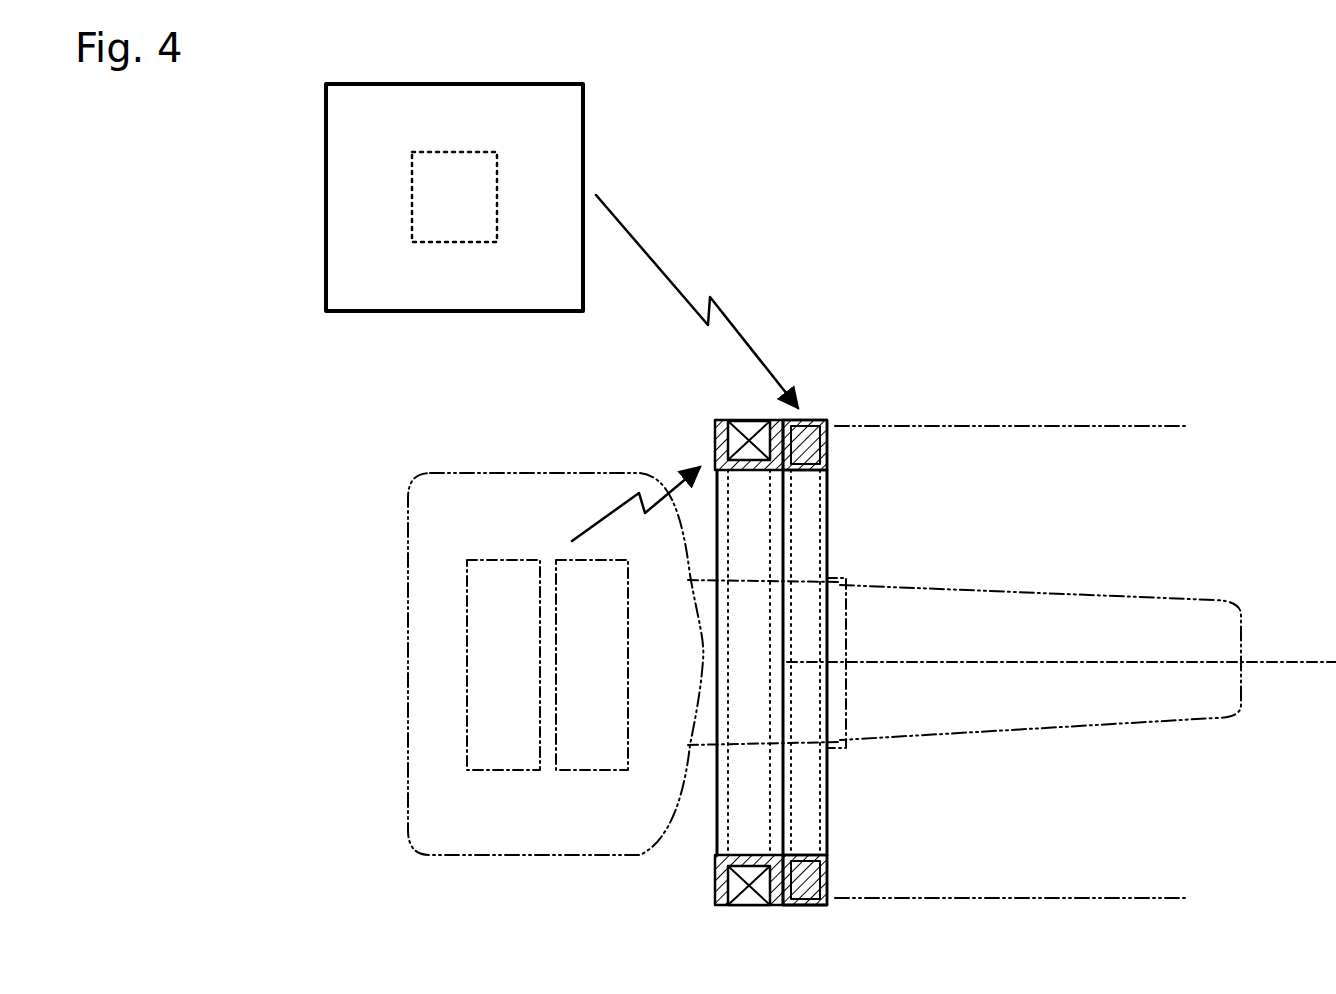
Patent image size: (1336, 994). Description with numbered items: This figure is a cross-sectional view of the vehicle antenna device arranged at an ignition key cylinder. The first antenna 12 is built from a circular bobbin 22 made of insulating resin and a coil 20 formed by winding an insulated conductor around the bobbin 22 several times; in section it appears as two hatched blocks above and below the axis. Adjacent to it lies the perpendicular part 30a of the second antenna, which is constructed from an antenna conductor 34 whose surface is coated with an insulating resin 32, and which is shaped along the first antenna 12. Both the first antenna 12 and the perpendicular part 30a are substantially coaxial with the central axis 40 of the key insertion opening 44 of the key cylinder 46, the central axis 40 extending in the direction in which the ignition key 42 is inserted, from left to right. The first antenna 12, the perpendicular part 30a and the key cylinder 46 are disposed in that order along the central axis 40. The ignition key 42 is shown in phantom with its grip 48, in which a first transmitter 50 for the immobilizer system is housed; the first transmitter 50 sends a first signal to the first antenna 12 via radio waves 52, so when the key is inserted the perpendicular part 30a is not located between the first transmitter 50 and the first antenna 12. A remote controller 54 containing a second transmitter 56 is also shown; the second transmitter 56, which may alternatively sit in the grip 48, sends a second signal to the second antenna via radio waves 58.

The first antenna 12 is at (735, 655).
The coil 20 is at (748, 420).
The bobbin 22 is at (720, 450).
The perpendicular part 30a is at (808, 422).
The insulating resin 32 is at (830, 885).
The antenna conductor 34 is at (815, 905).
The central axis 40 is at (1268, 660).
The ignition key 42 is at (1018, 600).
The key insertion opening 44 is at (846, 712).
The key cylinder 46 is at (985, 425).
The grip 48 is at (478, 855).
The first transmitter 50 is at (585, 752).
The radio waves 52 is at (590, 523).
The remote controller 54 is at (567, 140).
The second transmitter 56 is at (465, 242).
The radio waves 58 is at (680, 290).